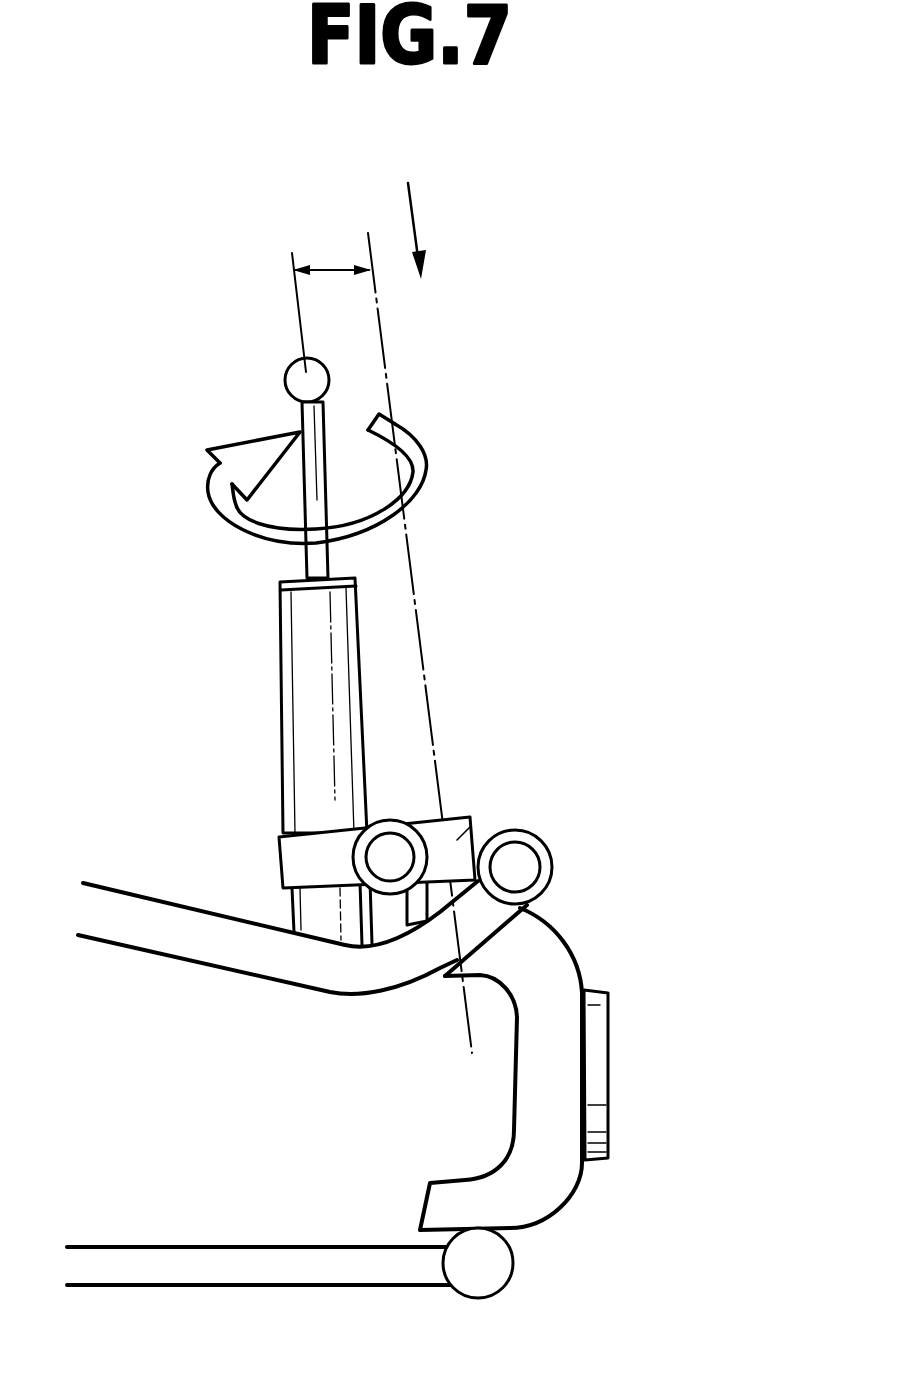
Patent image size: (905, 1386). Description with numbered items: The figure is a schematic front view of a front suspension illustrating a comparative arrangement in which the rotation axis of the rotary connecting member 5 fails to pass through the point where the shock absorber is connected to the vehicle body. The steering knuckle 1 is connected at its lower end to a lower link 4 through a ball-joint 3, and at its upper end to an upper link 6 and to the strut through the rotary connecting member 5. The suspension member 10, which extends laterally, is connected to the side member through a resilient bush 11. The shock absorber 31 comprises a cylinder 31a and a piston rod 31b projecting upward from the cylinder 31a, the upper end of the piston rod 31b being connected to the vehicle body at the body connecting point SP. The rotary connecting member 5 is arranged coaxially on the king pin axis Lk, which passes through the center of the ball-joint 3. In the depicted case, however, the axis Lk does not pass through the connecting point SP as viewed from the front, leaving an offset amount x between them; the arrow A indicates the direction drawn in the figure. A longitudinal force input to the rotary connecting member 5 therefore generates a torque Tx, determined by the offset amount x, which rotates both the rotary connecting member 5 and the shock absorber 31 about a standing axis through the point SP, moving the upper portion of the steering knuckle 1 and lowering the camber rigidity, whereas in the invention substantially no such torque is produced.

The steering knuckle 1 is at (593, 1077).
The ball-joint 3 is at (487, 1265).
The lower link 4 is at (230, 1258).
The rotary connecting member 5 is at (455, 840).
The upper link 6 is at (150, 932).
The suspension member 10 is at (392, 848).
The resilient bush 11 is at (517, 868).
The shock absorber 31 is at (120, 573).
The cylinder 31a is at (317, 673).
The piston rod 31b is at (310, 553).
The body connecting point SP is at (305, 378).
The king pin axis Lk is at (425, 665).
The torque Tx is at (407, 497).
The direction A is at (432, 231).
The offset amount x is at (331, 300).